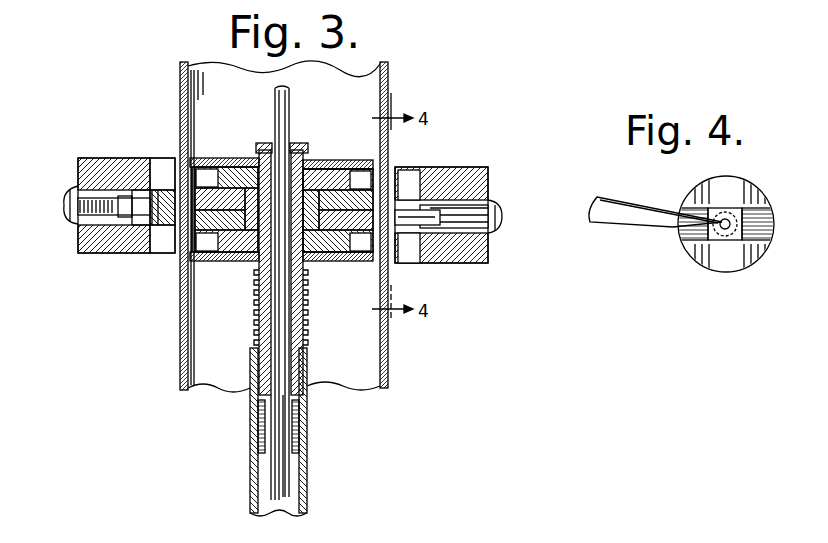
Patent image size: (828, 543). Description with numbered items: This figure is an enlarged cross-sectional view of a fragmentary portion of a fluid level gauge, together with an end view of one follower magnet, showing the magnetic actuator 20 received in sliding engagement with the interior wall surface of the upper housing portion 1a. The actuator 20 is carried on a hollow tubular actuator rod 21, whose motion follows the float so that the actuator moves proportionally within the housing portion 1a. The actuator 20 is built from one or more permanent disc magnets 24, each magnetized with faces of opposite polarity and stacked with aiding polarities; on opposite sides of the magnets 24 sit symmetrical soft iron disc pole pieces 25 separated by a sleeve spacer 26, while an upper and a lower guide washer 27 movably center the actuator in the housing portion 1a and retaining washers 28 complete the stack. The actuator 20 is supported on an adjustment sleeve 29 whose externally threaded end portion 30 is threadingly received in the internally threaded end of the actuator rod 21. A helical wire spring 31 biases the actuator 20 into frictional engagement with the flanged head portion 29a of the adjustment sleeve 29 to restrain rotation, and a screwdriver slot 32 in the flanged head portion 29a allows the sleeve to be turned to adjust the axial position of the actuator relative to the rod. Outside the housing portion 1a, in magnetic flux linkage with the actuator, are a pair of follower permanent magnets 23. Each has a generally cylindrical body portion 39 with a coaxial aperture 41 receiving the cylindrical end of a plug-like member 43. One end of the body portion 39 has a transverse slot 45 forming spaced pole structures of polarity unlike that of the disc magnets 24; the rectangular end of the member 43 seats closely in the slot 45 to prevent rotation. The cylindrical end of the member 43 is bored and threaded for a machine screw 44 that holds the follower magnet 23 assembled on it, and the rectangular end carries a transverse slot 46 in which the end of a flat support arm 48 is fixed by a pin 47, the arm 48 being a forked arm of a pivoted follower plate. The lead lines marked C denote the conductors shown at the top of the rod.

In FIG. 3, the upper housing portion 1a is at (388, 362).
In FIG. 3, the magnetic actuator 20 is at (205, 150).
In FIG. 3, the actuator rod 21 is at (307, 471).
In FIG. 3, the follower permanent magnet 23 is at (127, 253).
In FIG. 4, the follower permanent magnet 23 is at (712, 271).
In FIG. 3, the permanent disc magnet 24 is at (398, 198).
In FIG. 3, the soft iron disc pole piece 25 is at (312, 162).
In FIG. 3, the sleeve spacer 26 is at (258, 273).
In FIG. 3, the guide washer 27 is at (229, 158).
In FIG. 3, the retaining washer 28 is at (367, 162).
In FIG. 3, the adjustment sleeve 29 is at (260, 293).
In FIG. 3, the flanged head portion 29a is at (300, 146).
In FIG. 3, the externally threaded end portion 30 is at (305, 340).
In FIG. 3, the helical wire spring 31 is at (260, 320).
In FIG. 3, the screwdriver slot 32 is at (277, 138).
In FIG. 3, the cylindrical body portion 39 is at (96, 134).
In FIG. 3, the coaxial aperture 41 is at (108, 192).
In FIG. 3, the plug-like member 43 is at (108, 245).
In FIG. 3, the machine screw 44 is at (68, 190).
In FIG. 4, the transverse slot 45 is at (762, 236).
In FIG. 3, the transverse slot 46 is at (172, 252).
In FIG. 3, the pin 47 is at (151, 190).
In FIG. 3, the flat support arm 48 is at (138, 190).
In FIG. 4, the flat support arm 48 is at (641, 191).
In FIG. 3, the conductors C is at (290, 92).